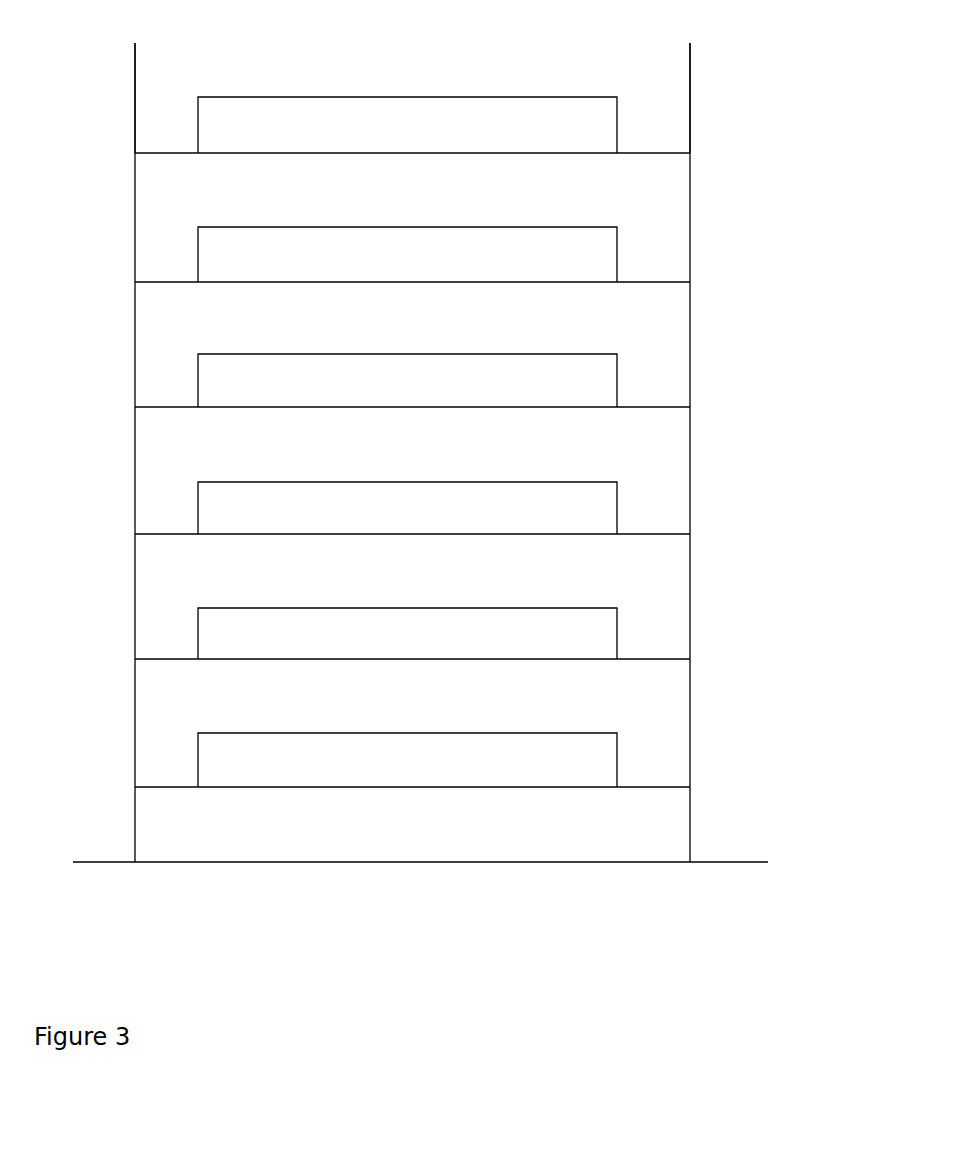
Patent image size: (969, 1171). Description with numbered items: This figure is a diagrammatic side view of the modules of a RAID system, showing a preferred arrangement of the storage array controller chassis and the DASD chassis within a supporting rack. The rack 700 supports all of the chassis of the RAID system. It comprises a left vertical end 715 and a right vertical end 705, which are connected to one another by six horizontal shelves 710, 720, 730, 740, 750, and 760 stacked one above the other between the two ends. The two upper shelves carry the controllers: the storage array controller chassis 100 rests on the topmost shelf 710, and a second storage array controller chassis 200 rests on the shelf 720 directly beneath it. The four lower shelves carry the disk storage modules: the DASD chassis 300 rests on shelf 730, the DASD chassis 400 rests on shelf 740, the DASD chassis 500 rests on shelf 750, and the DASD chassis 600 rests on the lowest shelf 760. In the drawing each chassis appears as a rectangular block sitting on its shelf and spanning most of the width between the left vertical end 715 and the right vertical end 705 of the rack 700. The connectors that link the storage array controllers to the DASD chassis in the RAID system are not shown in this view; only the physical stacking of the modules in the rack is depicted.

The storage array controller chassis 100 is at (208, 119).
The storage array controller chassis 200 is at (208, 249).
The DASD chassis 300 is at (208, 376).
The DASD chassis 400 is at (208, 503).
The DASD chassis 500 is at (208, 630).
The DASD chassis 600 is at (208, 755).
The rack 700 is at (690, 354).
The right vertical end 705 is at (689, 68).
The horizontal shelf 710 is at (647, 155).
The left vertical end 715 is at (133, 73).
The horizontal shelf 720 is at (645, 281).
The horizontal shelf 730 is at (650, 408).
The horizontal shelf 740 is at (650, 535).
The horizontal shelf 750 is at (650, 660).
The horizontal shelf 760 is at (660, 788).